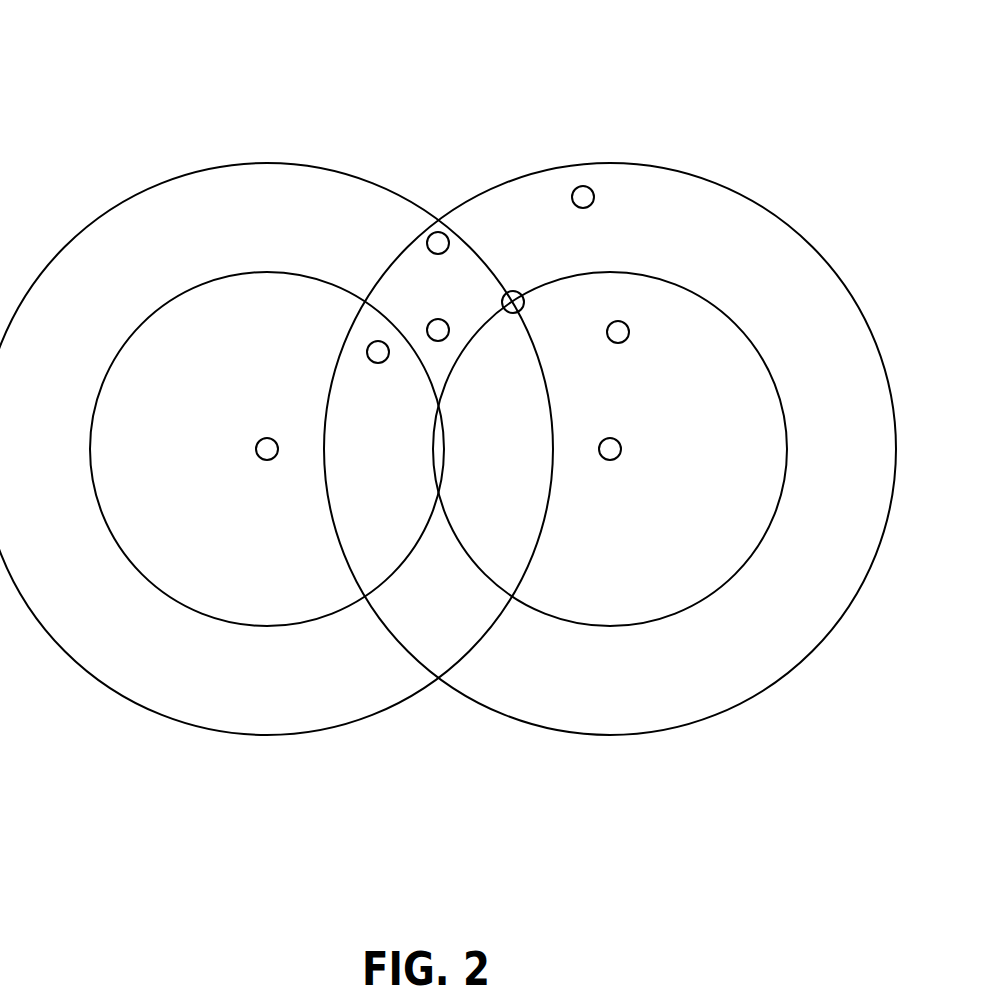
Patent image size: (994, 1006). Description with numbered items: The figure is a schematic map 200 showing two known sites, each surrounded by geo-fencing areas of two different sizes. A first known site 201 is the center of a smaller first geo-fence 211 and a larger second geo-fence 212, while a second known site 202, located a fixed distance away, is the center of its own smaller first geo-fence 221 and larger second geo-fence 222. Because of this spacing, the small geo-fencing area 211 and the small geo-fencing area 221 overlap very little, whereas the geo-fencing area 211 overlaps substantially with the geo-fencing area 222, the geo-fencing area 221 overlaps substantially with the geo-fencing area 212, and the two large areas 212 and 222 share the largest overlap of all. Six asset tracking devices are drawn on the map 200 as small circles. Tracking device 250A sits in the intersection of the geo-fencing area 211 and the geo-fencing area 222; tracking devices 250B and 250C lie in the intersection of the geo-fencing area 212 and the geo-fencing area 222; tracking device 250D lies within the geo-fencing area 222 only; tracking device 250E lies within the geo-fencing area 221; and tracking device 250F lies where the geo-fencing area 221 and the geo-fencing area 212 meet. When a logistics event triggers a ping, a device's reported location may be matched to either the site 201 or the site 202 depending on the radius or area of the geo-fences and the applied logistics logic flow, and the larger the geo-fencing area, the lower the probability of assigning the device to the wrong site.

The map 200 is at (142, 75).
The first known site 201 is at (256, 442).
The second known site 202 is at (621, 443).
The first geo-fence of first known site 211 is at (150, 317).
The second geo-fence of first known site 212 is at (135, 192).
The first geo-fence of second known site 221 is at (692, 293).
The second geo-fence of second known site 222 is at (748, 197).
The tracking device 250A is at (367, 352).
The tracking device 250B is at (436, 232).
The tracking device 250C is at (430, 322).
The tracking device 250D is at (588, 187).
The tracking device 250E is at (629, 335).
The tracking device 250F is at (521, 295).